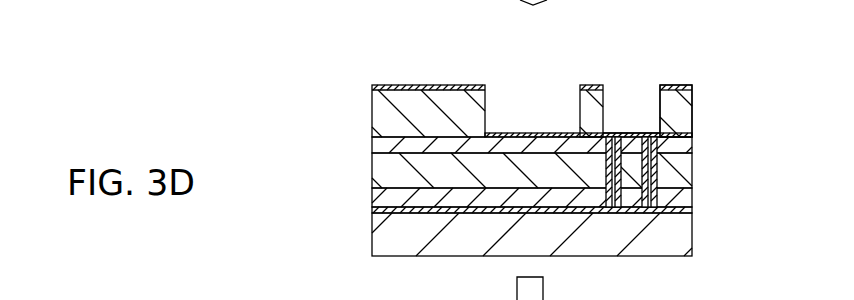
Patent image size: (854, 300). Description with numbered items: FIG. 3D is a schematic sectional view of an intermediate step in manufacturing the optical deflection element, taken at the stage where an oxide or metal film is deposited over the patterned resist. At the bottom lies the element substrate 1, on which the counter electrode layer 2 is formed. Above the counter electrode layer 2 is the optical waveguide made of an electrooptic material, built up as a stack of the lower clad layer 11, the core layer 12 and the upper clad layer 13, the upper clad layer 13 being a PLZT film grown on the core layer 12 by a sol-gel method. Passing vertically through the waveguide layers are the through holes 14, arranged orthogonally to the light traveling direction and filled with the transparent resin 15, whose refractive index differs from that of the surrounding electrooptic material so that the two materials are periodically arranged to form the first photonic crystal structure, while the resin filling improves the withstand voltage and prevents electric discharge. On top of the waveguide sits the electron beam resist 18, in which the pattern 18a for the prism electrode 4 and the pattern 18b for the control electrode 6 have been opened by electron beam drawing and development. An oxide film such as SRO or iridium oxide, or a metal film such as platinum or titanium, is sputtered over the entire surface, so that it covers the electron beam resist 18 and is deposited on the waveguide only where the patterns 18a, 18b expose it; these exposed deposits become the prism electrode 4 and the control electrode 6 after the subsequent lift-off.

The element substrate 1 is at (678, 230).
The counter electrode layer 2 is at (689, 208).
The prism electrode 4 is at (533, 133).
The control electrode 6 is at (630, 133).
The lower clad layer 11 is at (372, 197).
The core layer 12 is at (375, 171).
The upper clad layer 13 is at (372, 143).
The through holes 14 is at (650, 203).
The transparent resin 15 is at (626, 203).
The electron beam resist 18 is at (432, 103).
The pattern of the prism electrode 18a is at (577, 110).
The pattern of the control electrode 18b is at (652, 112).